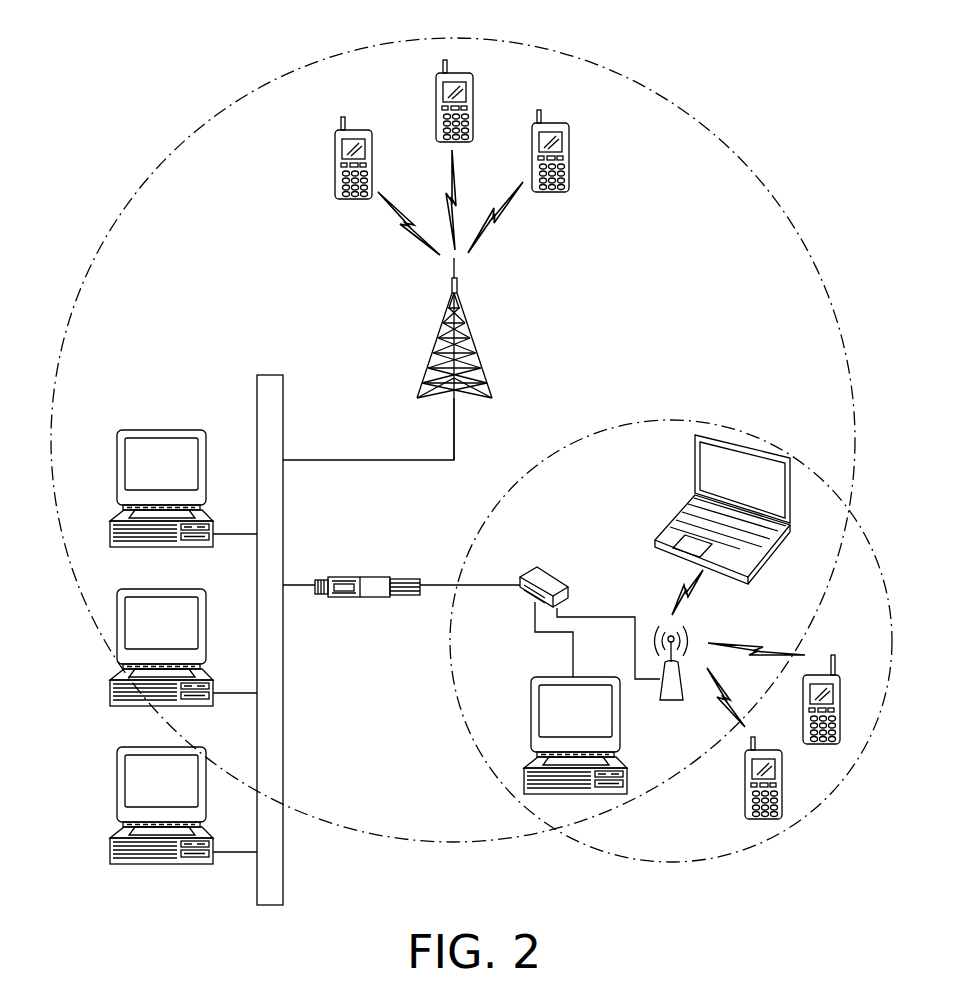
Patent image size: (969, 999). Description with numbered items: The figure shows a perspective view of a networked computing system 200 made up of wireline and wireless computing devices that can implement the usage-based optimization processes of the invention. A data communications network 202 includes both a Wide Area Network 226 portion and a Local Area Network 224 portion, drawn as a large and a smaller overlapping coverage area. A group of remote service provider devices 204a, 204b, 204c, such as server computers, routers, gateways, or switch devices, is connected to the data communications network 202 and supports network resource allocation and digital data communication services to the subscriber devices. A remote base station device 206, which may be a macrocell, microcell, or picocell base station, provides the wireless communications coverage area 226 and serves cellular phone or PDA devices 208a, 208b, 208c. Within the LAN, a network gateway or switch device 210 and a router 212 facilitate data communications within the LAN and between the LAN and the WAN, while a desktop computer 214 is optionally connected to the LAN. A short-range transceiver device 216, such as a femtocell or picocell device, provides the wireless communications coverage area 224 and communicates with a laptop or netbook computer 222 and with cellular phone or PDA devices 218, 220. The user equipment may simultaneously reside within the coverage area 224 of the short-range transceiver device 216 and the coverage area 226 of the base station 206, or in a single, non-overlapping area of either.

The networked computing system 200 is at (215, 48).
The data communications network 202 is at (257, 413).
The remote service provider device 204a is at (150, 430).
The remote service provider device 204b is at (160, 589).
The remote service provider device 204c is at (145, 747).
The remote base station device 206 is at (472, 342).
The cellular phone or PDA device 208a is at (335, 150).
The cellular phone or PDA device 208b is at (436, 97).
The cellular phone or PDA device 208c is at (567, 150).
The network gateway or switch device 210 is at (372, 577).
The router 212 is at (555, 573).
The desktop computer 214 is at (545, 677).
The short-range transceiver device 216 is at (672, 702).
The cellular phone or PDA device 218 is at (762, 818).
The cellular phone or PDA device 220 is at (825, 747).
The laptop or netbook computer 222 is at (675, 520).
The wireless communications coverage area of the short-range transceiver device (LAN 224 is at (620, 425).
The wireless communications coverage area of the base station (WAN) 226 is at (765, 185).